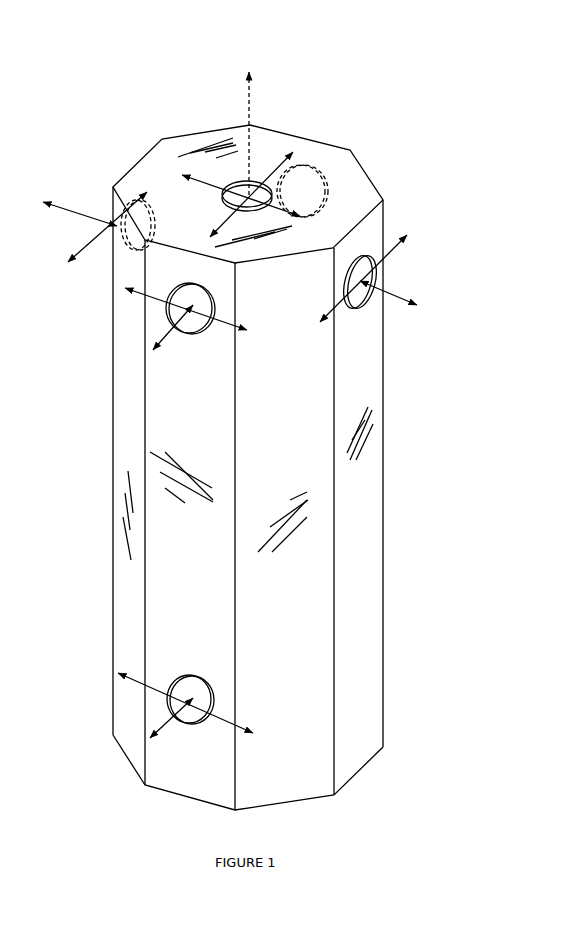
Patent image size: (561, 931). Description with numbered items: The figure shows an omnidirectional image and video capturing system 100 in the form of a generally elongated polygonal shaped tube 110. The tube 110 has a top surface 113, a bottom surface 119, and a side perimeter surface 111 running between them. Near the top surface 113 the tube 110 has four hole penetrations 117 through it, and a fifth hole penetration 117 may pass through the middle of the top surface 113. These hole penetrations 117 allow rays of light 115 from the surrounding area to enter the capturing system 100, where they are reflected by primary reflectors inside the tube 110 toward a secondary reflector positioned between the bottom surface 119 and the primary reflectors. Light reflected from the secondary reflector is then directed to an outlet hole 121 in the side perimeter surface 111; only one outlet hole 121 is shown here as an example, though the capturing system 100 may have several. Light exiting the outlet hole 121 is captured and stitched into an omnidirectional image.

The capturing system 100 is at (428, 89).
The polygonal shaped tube 110 is at (373, 652).
The side perimeter surface 111 is at (373, 453).
The top surface 113 is at (262, 172).
The rays of light from the surrounding area 115 is at (78, 211).
The hole penetrations 117 is at (165, 313).
The bottom surface 119 is at (367, 763).
The outlet hole 121 is at (167, 705).